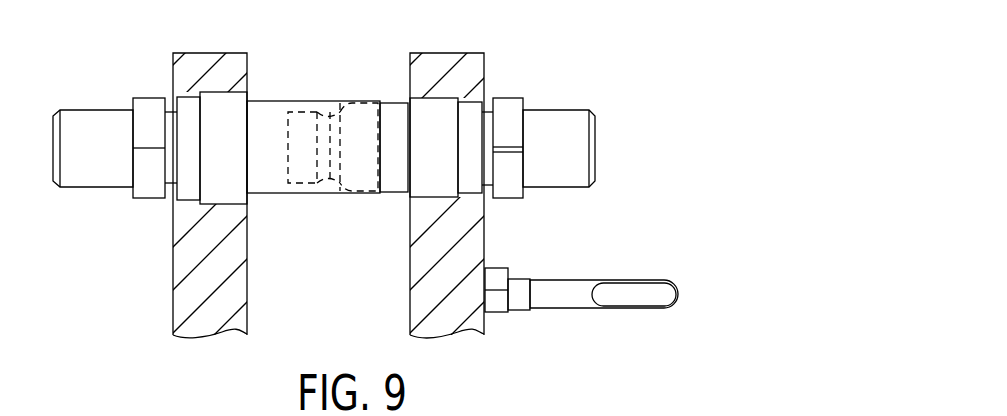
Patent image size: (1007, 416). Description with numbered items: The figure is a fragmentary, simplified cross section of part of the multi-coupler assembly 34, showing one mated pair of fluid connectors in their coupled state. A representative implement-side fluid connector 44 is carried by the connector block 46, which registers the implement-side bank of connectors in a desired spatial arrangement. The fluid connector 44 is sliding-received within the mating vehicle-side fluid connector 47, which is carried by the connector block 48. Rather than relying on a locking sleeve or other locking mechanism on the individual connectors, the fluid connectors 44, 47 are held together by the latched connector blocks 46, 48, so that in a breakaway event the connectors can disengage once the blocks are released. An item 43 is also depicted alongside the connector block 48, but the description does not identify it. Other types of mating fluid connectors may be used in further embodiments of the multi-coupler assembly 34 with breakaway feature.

The multi-coupler assembly 34 is at (582, 60).
The sensor 43 is at (625, 280).
The fluid connector 44 is at (397, 100).
The connector block 46 is at (445, 53).
The fluid connector 47 is at (270, 100).
The connector block 48 is at (210, 53).